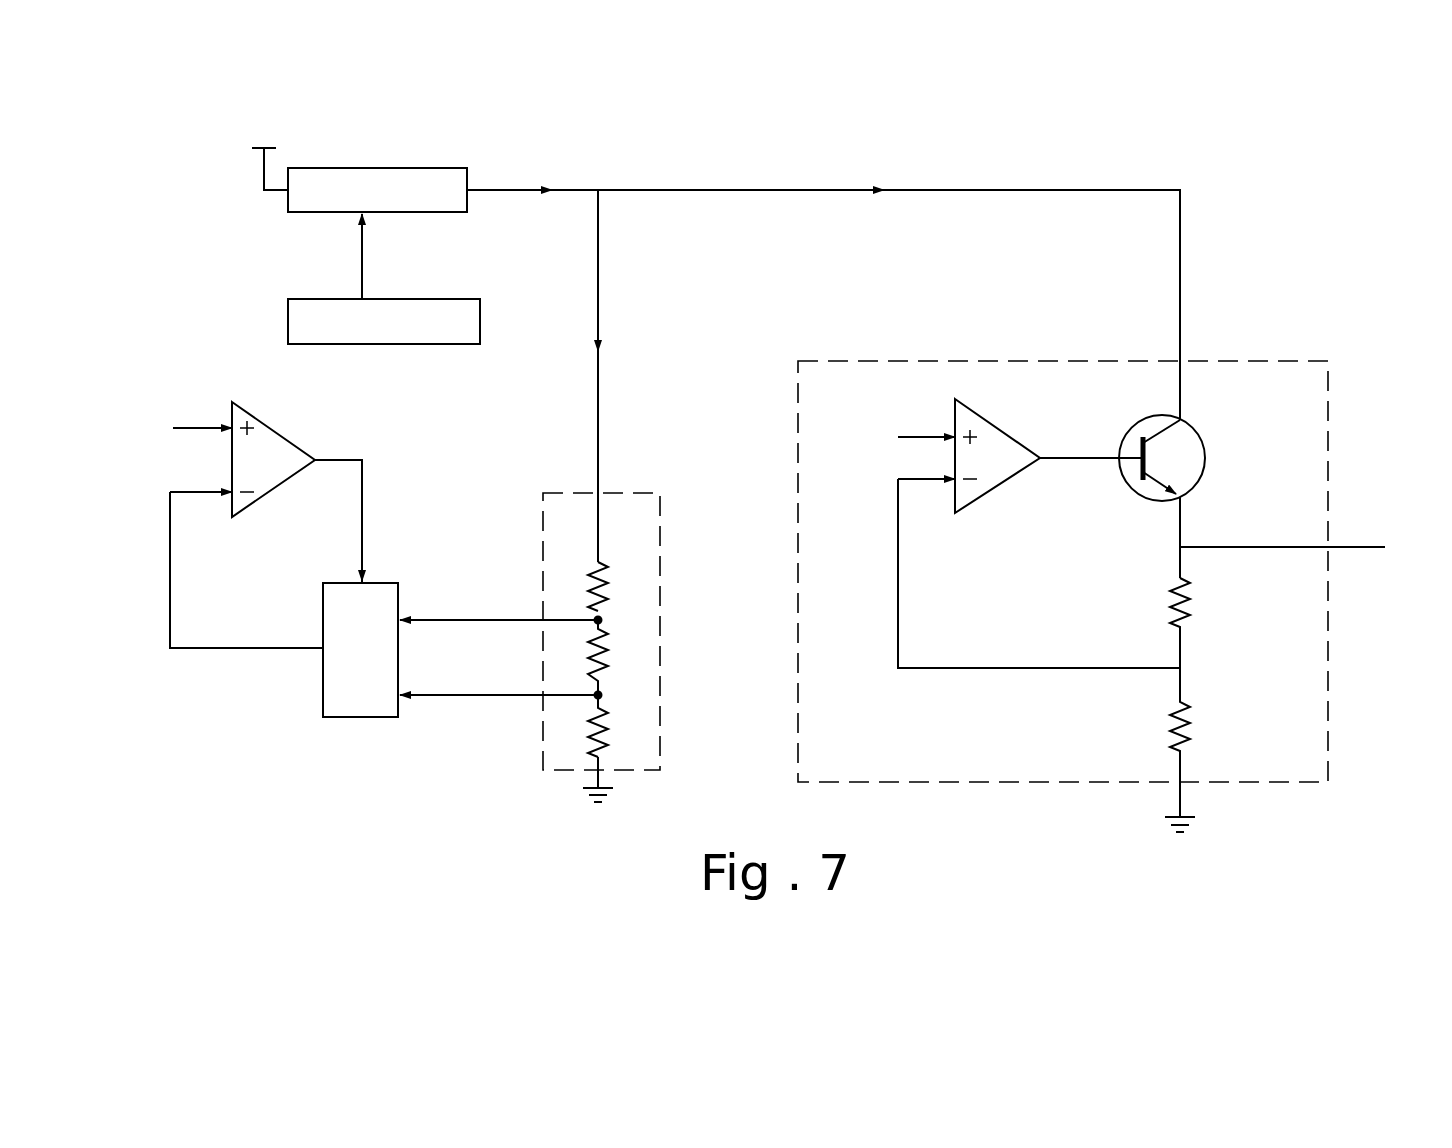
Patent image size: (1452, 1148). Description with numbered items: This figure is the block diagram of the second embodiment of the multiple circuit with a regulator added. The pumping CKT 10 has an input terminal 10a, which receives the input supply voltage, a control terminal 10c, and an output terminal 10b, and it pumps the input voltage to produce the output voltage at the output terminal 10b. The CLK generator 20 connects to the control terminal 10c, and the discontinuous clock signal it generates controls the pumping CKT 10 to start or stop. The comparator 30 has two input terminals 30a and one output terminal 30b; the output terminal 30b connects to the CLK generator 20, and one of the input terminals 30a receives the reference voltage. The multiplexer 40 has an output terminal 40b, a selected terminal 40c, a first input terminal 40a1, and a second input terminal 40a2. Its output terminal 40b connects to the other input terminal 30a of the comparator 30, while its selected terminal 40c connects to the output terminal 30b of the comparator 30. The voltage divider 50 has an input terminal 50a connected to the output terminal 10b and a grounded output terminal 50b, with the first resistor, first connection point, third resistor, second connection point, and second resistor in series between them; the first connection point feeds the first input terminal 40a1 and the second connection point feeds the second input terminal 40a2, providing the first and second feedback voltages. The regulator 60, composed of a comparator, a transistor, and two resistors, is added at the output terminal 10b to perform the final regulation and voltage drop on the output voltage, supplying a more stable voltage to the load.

The pumping CKT 10 is at (400, 168).
The input terminal 10a is at (286, 194).
The output terminal 10b is at (469, 186).
The control terminal 10c is at (360, 213).
The CLK generator 20 is at (482, 306).
The comparator 30 is at (232, 418).
The input terminals 30a is at (230, 434).
The output terminal 30b is at (319, 455).
The multiplexer 40 is at (361, 719).
The first input terminal 40a1 is at (400, 615).
The second input terminal 40a2 is at (400, 700).
The output terminal 40b is at (323, 646).
The selected terminal 40c is at (370, 583).
The voltage divider 50 is at (650, 537).
The input terminal 50a is at (600, 492).
The output terminal 50b is at (590, 774).
The regulator 60 is at (798, 668).